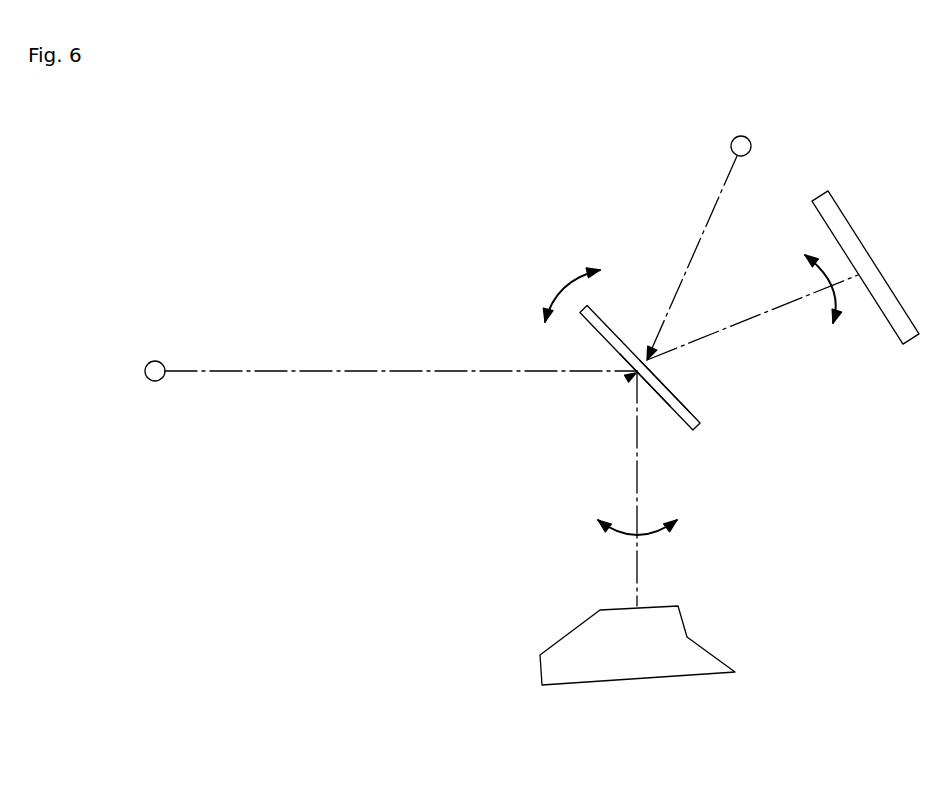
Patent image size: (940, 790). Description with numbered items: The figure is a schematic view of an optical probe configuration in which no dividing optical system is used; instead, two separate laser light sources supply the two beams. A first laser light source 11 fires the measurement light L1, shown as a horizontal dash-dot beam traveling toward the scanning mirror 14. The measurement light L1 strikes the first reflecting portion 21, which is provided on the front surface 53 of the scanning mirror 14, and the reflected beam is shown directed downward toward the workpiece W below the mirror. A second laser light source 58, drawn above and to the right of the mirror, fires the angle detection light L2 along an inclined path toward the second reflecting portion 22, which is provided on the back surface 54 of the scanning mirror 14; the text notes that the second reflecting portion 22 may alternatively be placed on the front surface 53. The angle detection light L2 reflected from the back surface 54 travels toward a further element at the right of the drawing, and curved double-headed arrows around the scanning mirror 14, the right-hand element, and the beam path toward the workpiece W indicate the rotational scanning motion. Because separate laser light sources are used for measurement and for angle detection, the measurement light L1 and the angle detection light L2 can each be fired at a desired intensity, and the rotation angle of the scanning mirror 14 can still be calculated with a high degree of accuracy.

The first laser light source 11 is at (155, 381).
The measurement light L1 is at (348, 371).
The second laser light source 58 is at (731, 147).
The angle detection light L2 is at (702, 230).
The scanning mirror 14 is at (700, 428).
The front surface 53 is at (668, 403).
The back surface 54 is at (688, 398).
The first reflecting portion 21 is at (626, 379).
The second reflecting portion 22 is at (652, 352).
The workpiece W is at (540, 668).